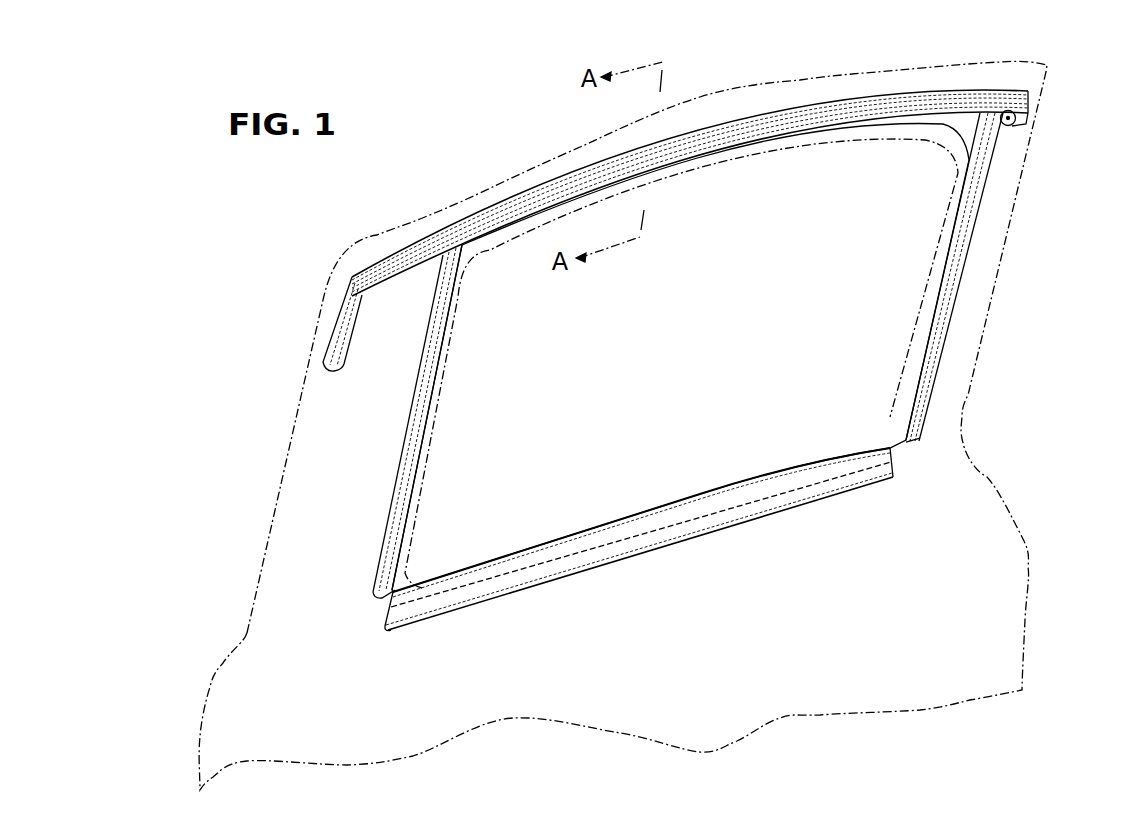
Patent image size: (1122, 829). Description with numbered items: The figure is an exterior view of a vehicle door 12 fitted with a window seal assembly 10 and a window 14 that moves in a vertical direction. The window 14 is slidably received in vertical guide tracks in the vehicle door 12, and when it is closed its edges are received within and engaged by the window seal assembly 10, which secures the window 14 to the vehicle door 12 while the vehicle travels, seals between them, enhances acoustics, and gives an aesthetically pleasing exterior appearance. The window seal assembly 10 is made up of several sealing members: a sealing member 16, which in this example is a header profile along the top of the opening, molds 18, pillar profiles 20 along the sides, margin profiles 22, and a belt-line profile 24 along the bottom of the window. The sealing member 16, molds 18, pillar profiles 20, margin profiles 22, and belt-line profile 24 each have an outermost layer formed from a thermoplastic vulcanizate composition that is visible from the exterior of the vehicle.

The window seal assembly 10 is at (673, 334).
The vehicle door 12 is at (268, 538).
The window 14 is at (748, 299).
The sealing member 16 is at (808, 117).
The molds 18 is at (970, 133).
The pillar profiles 20 is at (417, 451).
The margin profiles 22 is at (347, 322).
The belt-line profile 24 is at (580, 560).